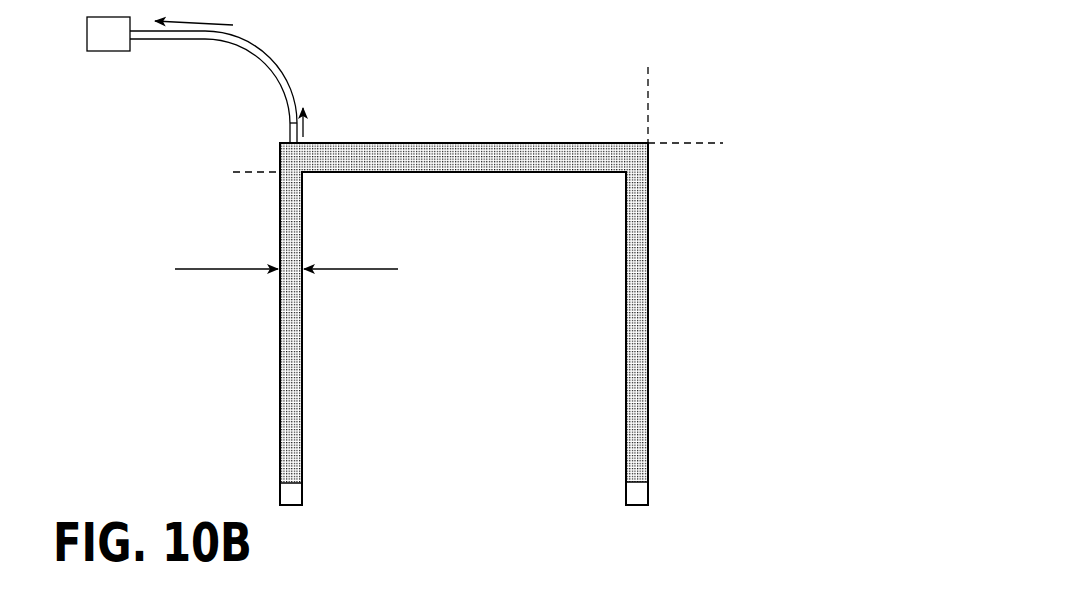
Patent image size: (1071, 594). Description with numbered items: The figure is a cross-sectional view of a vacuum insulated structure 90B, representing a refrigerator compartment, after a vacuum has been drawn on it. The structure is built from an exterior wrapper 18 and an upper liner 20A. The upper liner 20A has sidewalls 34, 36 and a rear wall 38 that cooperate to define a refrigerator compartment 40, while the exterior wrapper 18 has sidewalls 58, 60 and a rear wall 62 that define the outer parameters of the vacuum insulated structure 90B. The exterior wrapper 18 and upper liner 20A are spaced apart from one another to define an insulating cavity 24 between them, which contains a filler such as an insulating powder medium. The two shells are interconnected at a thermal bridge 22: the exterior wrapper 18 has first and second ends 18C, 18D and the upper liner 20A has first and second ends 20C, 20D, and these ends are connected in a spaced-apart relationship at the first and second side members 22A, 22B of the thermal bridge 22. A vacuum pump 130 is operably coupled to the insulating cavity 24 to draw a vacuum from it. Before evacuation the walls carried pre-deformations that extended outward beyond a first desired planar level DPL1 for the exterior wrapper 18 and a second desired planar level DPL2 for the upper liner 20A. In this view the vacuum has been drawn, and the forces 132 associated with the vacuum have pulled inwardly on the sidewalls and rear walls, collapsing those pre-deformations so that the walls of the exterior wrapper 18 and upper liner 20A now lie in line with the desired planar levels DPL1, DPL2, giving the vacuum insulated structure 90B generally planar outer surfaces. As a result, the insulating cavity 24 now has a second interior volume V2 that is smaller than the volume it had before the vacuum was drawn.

The exterior wrapper 18 is at (343, 143).
The rear wall 62 is at (444, 143).
The insulating cavity 24 is at (505, 158).
The second interior volume V2 is at (558, 160).
The vacuum insulated structure 90B is at (680, 100).
The first desired planar level DPL1 is at (647, 100).
The second desired planar level DPL2 is at (284, 158).
The vacuum pump 130 is at (120, 53).
The forces 132 is at (244, 268).
The upper liner 20A is at (346, 174).
The rear wall 38 is at (470, 172).
The refrigerator compartment 40 is at (548, 318).
The sidewall 60 is at (647, 345).
The sidewall 36 is at (625, 365).
The sidewall 58 is at (280, 372).
The sidewall 34 is at (302, 355).
The first end 18C is at (280, 482).
The thermal bridge 22 is at (270, 485).
The first end 20C is at (302, 483).
The first side member 22A is at (293, 507).
The second end 18D is at (648, 481).
The second end 20D is at (626, 482).
The second side member 22B is at (653, 509).